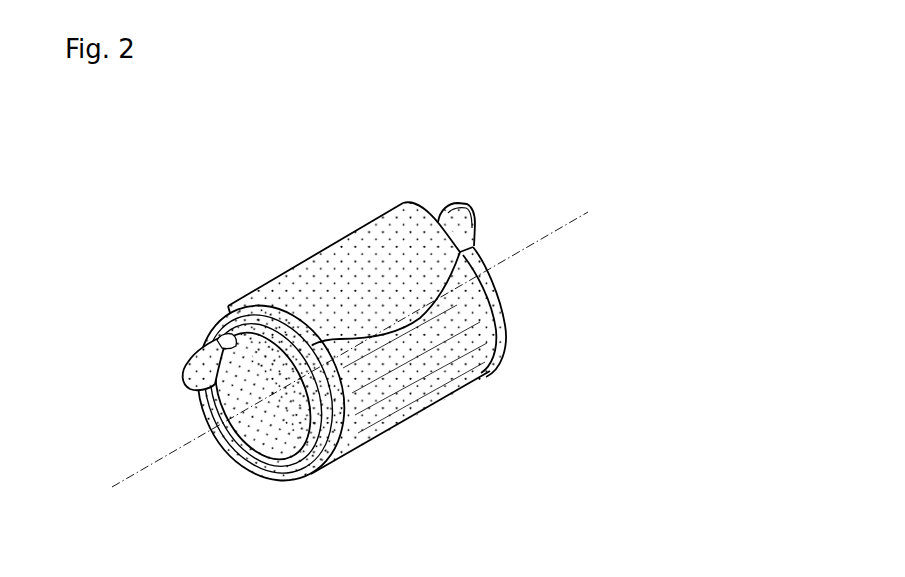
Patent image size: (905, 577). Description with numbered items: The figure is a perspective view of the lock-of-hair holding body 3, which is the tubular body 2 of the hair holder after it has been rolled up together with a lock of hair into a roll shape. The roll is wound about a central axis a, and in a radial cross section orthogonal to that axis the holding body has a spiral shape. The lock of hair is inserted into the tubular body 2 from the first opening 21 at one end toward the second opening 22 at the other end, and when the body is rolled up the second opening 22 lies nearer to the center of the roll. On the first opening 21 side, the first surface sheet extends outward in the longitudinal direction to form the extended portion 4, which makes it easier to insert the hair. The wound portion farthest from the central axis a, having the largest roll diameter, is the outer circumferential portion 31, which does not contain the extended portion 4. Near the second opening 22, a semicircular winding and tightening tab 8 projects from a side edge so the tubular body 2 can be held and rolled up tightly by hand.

The tubular body 2 is at (501, 241).
The lock-of-hair holding body 3 is at (451, 127).
The extended portion 4 is at (308, 265).
The winding and tightening tab 8 is at (187, 392).
The first opening 21 is at (418, 318).
The second opening 22 is at (222, 340).
The outer circumferential portion 31 is at (432, 385).
The central axis a is at (131, 474).